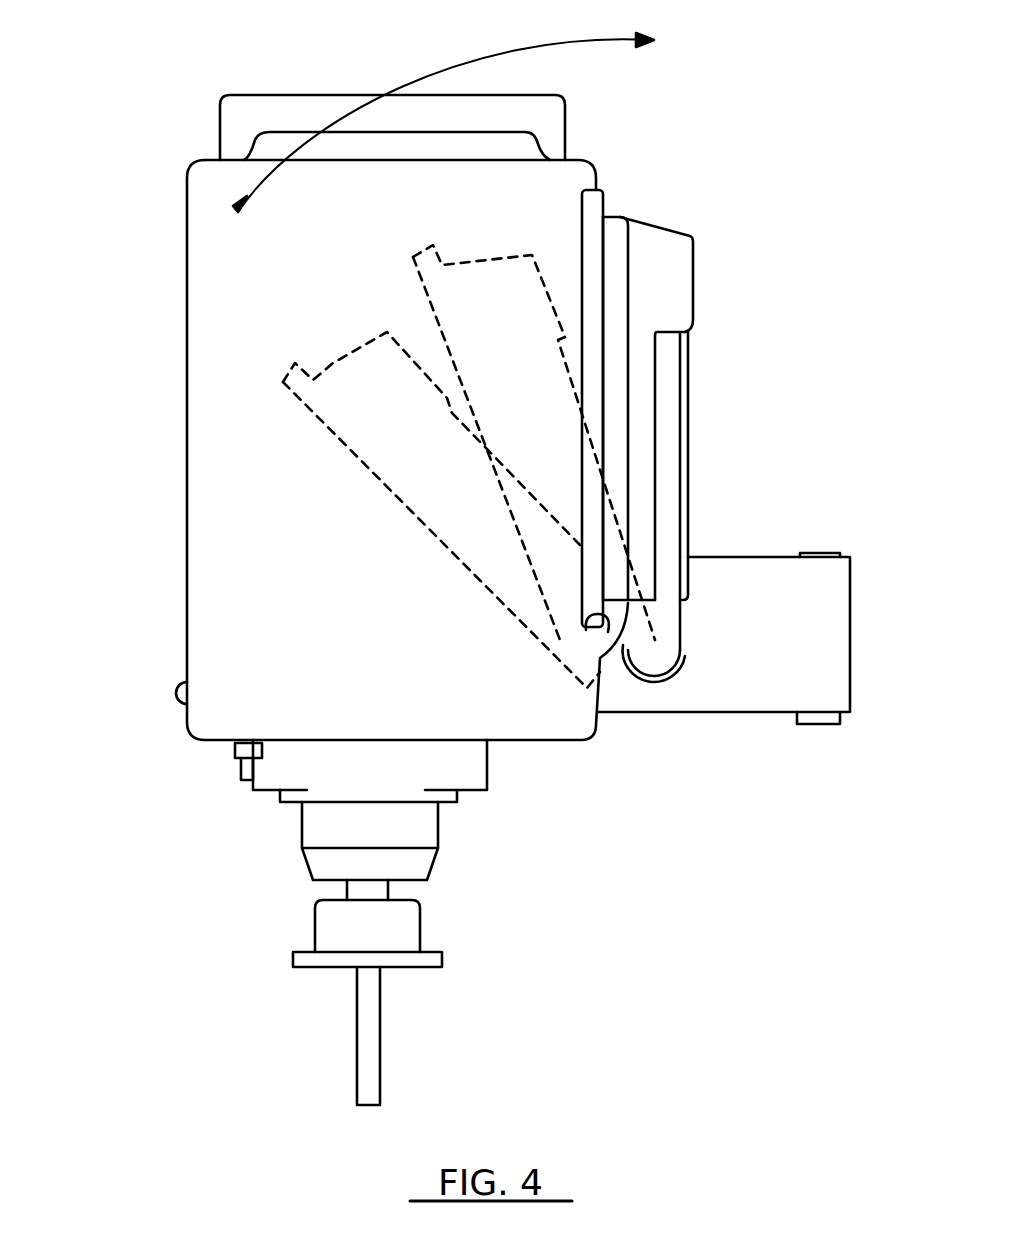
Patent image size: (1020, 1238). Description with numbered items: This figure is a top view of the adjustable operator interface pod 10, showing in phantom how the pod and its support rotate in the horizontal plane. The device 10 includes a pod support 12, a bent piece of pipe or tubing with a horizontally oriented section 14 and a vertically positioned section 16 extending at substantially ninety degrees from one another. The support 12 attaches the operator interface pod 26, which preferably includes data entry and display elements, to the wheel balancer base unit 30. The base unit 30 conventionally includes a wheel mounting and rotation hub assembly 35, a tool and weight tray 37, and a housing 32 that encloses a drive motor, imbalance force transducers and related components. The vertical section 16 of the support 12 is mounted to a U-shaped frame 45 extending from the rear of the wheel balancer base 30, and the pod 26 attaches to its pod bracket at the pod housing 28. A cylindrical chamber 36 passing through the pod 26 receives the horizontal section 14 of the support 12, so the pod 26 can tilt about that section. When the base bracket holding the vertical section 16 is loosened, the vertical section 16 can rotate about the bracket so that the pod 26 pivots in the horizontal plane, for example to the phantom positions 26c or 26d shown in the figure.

The adjustable operator interface pod 10 is at (680, 157).
The pod support 12 is at (673, 667).
The horizontal section 14 is at (668, 477).
The vertical section 16 is at (655, 690).
The operator interface pod 26 is at (710, 496).
The pivoted position of pod 26c is at (520, 252).
The pivoted position of pod 26d is at (333, 363).
The pod housing 28 is at (668, 282).
The wheel balancer base unit 30 is at (524, 745).
The housing 32 is at (582, 743).
The wheel mounting and rotation hub assembly 35 is at (333, 832).
The cylindrical chamber 36 is at (688, 330).
The tool and weight tray 37 is at (220, 617).
The U-shaped frame 45 is at (762, 577).